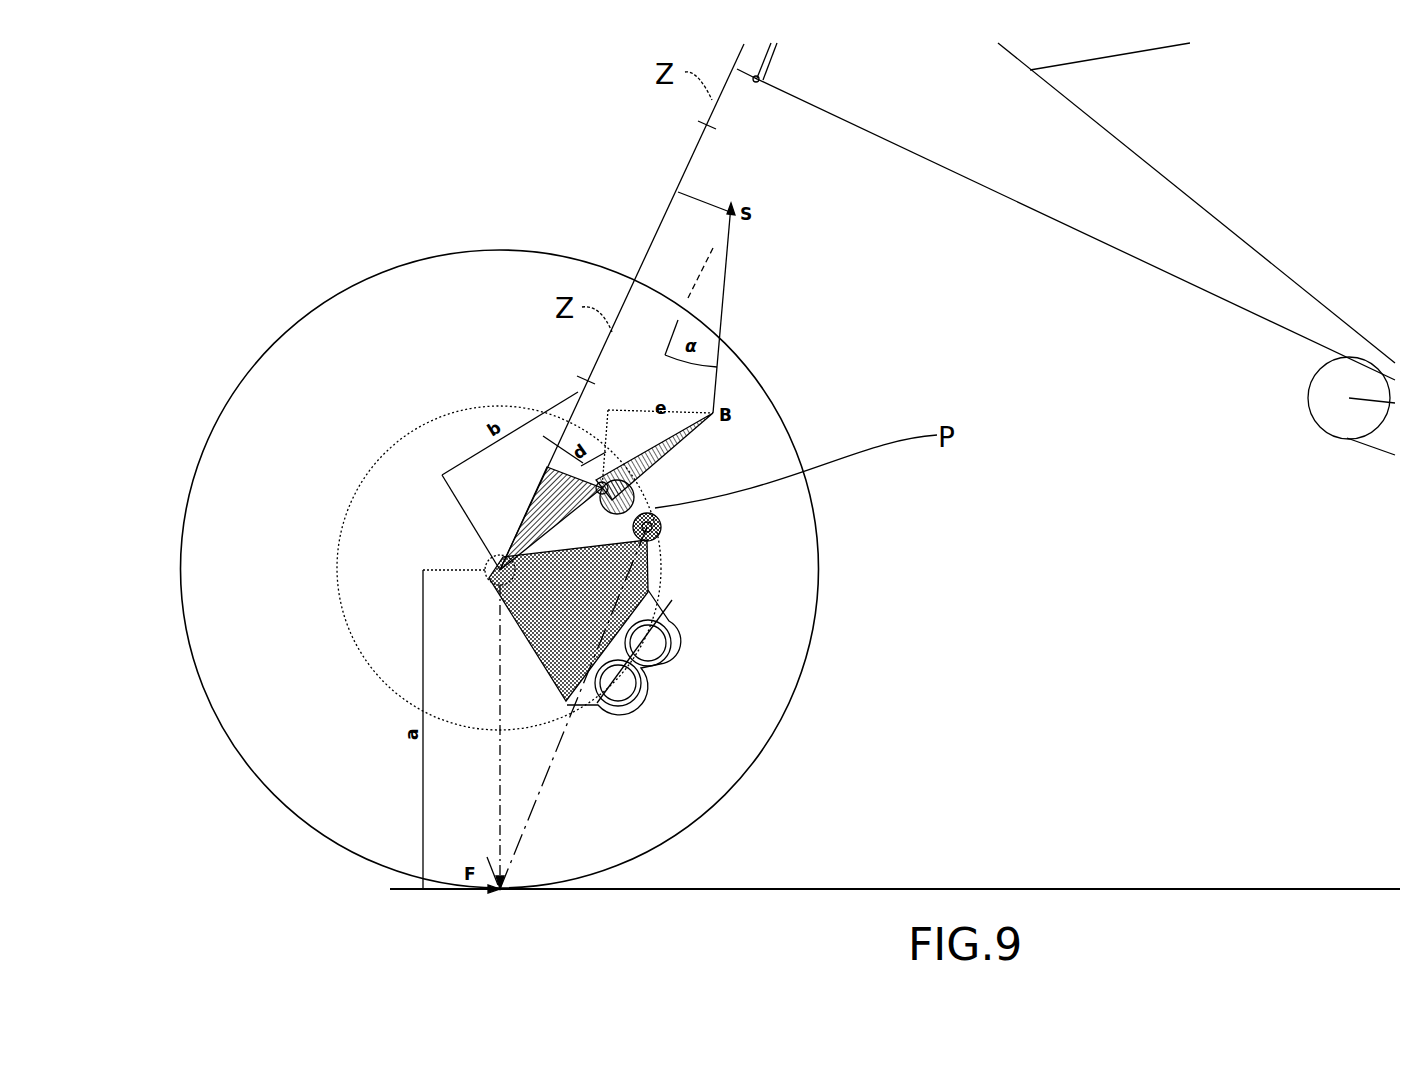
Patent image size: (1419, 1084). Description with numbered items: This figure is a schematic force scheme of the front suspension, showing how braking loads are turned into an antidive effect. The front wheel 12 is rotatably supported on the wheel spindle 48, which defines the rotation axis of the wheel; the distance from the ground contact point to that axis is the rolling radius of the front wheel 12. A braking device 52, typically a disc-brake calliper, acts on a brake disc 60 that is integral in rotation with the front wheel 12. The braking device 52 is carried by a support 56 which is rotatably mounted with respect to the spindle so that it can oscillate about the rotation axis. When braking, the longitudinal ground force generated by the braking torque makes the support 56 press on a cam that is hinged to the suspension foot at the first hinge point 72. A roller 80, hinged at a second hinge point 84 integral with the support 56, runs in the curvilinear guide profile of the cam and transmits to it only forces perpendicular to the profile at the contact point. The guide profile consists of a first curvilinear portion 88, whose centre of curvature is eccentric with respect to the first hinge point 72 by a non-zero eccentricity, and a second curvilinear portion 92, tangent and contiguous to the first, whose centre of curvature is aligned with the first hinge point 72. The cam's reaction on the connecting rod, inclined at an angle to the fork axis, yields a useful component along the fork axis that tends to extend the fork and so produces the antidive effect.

The front wheel 12 is at (757, 735).
The wheel spindle 48 is at (483, 567).
The braking device 52 is at (637, 703).
The support 56 is at (538, 657).
The brake disc 60 is at (382, 630).
The first hinge point 72 is at (533, 490).
The roller 80 is at (660, 523).
The second hinge point 84 is at (660, 527).
The first curvilinear portion 88 is at (648, 565).
The second curvilinear portion 92 is at (658, 490).